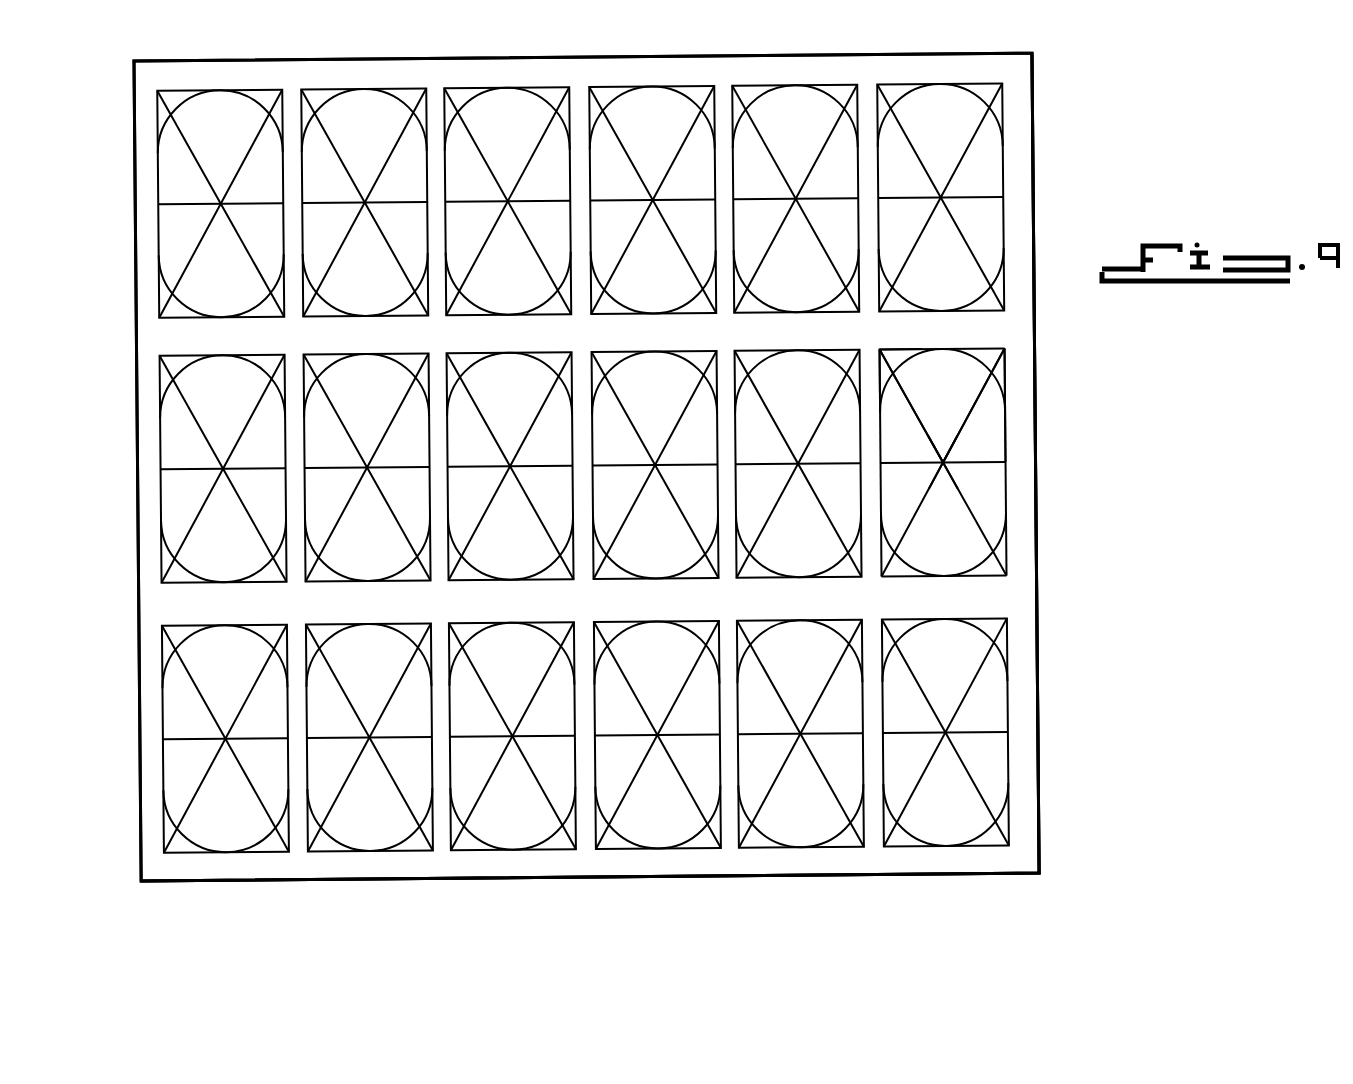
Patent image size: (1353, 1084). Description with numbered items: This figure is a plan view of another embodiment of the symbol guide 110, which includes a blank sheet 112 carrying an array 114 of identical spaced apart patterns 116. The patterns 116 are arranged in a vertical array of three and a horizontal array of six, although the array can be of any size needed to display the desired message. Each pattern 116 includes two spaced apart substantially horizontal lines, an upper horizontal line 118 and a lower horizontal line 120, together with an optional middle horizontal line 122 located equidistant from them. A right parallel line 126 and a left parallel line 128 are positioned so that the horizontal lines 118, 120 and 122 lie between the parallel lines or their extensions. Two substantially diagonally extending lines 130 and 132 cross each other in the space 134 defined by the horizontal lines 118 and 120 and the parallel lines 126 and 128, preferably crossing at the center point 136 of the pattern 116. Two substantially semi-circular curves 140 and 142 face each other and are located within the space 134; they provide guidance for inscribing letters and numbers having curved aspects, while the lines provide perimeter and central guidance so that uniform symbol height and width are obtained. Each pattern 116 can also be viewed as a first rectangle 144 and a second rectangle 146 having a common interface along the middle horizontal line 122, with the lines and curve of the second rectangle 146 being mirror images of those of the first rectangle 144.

The symbol guide 110 is at (1074, 328).
The blank sheet 112 is at (1022, 158).
The array 114 is at (1011, 598).
The pattern 116 is at (646, 510).
The upper horizontal line 118 is at (888, 350).
The lower horizontal line 120 is at (897, 578).
The middle horizontal line 122 is at (893, 458).
The right parallel line 126 is at (1007, 372).
The left parallel line 128 is at (877, 366).
The diagonally extending line 130 is at (966, 504).
The diagonally extending line 132 is at (908, 530).
The space 134 is at (961, 413).
The center point 136 is at (953, 452).
The semi-circular curve 140 is at (1007, 360).
The semi-circular curve 142 is at (1002, 568).
The first rectangle 144 is at (1007, 422).
The second rectangle 146 is at (1007, 472).